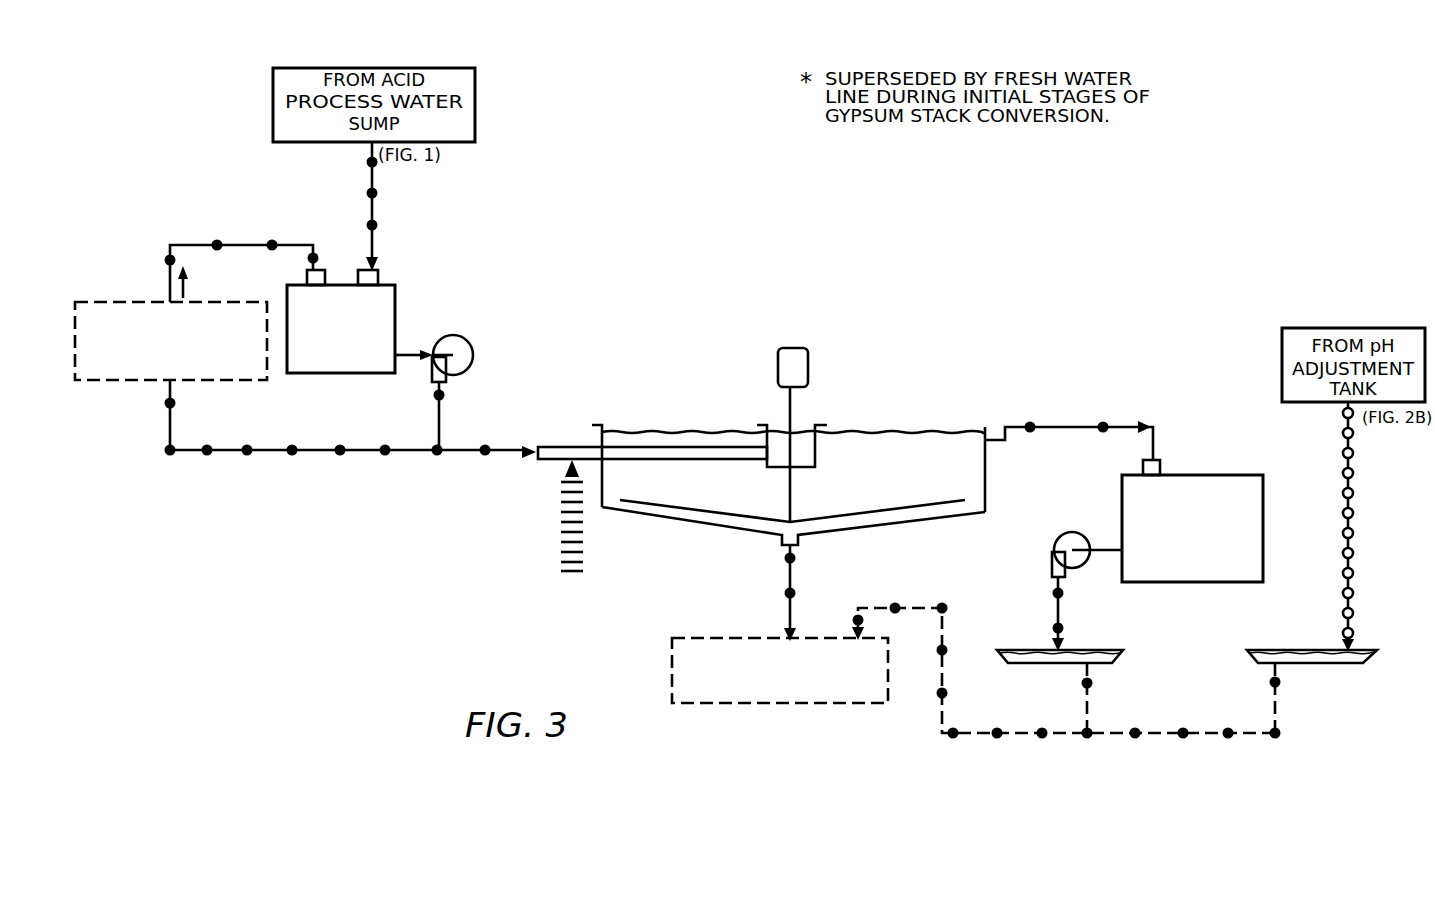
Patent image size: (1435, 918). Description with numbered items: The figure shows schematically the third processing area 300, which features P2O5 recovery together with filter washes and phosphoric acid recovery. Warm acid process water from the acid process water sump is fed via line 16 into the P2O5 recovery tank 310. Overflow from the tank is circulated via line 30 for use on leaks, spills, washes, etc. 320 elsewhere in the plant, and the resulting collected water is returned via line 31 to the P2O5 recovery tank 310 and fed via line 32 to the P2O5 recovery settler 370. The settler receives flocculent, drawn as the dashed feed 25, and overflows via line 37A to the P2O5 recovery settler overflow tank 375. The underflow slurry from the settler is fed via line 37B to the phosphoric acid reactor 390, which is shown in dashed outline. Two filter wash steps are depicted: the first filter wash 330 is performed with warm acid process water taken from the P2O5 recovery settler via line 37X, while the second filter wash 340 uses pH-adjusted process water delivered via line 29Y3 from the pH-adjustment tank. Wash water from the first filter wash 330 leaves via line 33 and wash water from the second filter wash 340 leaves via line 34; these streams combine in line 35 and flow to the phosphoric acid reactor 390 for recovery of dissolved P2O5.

The third processing area 300 is at (1254, 296).
The line 16 is at (375, 246).
The line 31 is at (168, 276).
The leaks, spills, washes, etc. 320 is at (130, 383).
The P2O5 recovery tank 310 is at (316, 374).
The line 30 is at (340, 449).
The line 32 is at (502, 448).
The flocculent feed 25 is at (563, 520).
The P2O5 recovery settler 370 is at (967, 513).
The line 37A is at (1080, 427).
The P2O5 recovery settler overflow tank 375 is at (1228, 475).
The line from pH adjustment tank 29Y3 is at (1341, 464).
The line 37X is at (1057, 614).
The line 37B is at (797, 584).
The phosphoric acid reactor 390 is at (730, 705).
The line 35 is at (941, 678).
The filter wash no. 1 330 is at (1052, 664).
The line 33 is at (1088, 714).
The line 34 is at (1272, 715).
The filter wash no. 2 340 is at (1310, 664).